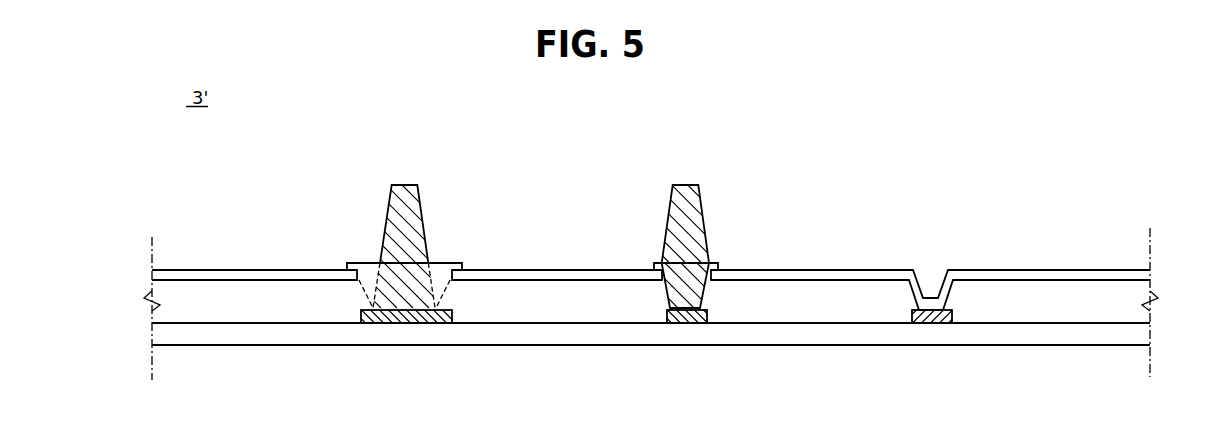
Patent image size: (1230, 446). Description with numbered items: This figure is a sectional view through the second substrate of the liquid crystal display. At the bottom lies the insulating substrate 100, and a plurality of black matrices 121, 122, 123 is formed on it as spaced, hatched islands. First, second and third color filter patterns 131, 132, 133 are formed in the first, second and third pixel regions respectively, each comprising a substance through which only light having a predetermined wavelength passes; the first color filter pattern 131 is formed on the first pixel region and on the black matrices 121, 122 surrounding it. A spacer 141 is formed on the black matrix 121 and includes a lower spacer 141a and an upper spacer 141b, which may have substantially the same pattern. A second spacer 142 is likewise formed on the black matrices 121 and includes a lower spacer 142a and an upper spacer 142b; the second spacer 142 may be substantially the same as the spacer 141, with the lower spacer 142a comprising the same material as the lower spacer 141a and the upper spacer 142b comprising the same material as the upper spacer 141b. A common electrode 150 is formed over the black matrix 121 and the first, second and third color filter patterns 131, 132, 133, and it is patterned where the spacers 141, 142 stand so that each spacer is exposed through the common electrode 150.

The insulating substrate 100 is at (188, 332).
The black matrix 121 is at (407, 313).
The black matrix 122 is at (683, 313).
The black matrix 123 is at (927, 313).
The first color filter pattern 131 is at (238, 305).
The second color filter pattern 132 is at (830, 302).
The third color filter pattern 133 is at (1030, 302).
The spacer 141 is at (49, 217).
The lower spacer 141a is at (383, 298).
The upper spacer 141b is at (388, 232).
The second spacer 142 is at (859, 200).
The lower spacer 142a is at (690, 280).
The upper spacer 142b is at (693, 217).
The common electrode 150 is at (1132, 273).